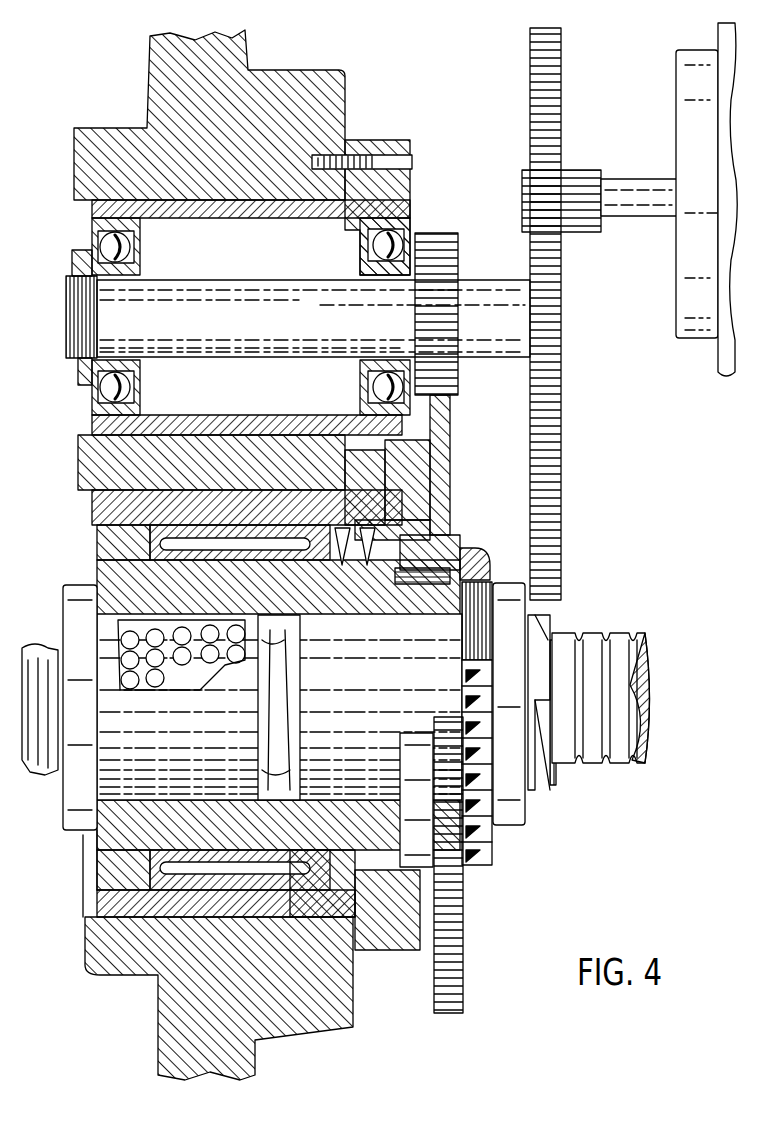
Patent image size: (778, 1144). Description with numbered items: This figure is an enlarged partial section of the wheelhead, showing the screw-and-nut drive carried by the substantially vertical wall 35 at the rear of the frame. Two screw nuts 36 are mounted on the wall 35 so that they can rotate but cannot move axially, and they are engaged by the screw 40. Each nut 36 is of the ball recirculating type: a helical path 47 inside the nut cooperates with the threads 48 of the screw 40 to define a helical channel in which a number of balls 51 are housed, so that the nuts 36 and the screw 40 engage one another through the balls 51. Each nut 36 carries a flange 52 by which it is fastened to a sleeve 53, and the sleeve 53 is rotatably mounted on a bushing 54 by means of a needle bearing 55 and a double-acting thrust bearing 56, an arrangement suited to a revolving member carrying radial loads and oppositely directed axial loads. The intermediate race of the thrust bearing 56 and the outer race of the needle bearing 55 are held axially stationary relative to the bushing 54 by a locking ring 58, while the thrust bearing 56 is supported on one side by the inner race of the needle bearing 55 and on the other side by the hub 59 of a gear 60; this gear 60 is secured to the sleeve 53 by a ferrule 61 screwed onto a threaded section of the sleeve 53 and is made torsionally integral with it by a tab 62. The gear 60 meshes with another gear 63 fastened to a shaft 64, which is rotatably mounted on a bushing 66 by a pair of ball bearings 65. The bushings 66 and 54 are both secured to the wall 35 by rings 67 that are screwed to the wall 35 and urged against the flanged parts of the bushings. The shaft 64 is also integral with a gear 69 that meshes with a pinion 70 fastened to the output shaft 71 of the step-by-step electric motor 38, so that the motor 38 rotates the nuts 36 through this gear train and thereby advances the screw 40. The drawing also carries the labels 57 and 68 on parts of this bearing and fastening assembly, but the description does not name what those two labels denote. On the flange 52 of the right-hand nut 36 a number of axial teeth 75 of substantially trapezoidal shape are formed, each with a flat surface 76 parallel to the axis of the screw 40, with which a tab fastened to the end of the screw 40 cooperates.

The vertical wall 35 is at (178, 137).
The screw nut 36 is at (85, 805).
The step-by-step electric motor 38 is at (720, 230).
The screw 40 is at (617, 648).
The helical path 47 is at (128, 610).
The threads 48 is at (285, 730).
The balls 51 is at (130, 670).
The flange 52 is at (78, 835).
The sleeve 53 is at (118, 590).
The bushing 54 is at (115, 930).
The needle bearing 55 is at (298, 920).
The double-acting thrust bearing 56 is at (400, 550).
The clutch plate 57 is at (395, 525).
The locking ring 58 is at (415, 470).
The hub 59 is at (445, 565).
The gear 60 is at (463, 960).
The ferrule 61 is at (482, 568).
The tab 62 is at (485, 552).
The gear 63 is at (438, 240).
The shaft 64 is at (88, 290).
The ball bearings 65 is at (98, 235).
The bushing 66 is at (262, 210).
The ring 67 is at (375, 140).
The bolt 68 is at (410, 152).
The gear 69 is at (560, 312).
The pinion 70 is at (578, 185).
The output shaft 71 is at (640, 190).
The axial teeth 75 is at (540, 785).
The flat surface 76 is at (545, 680).